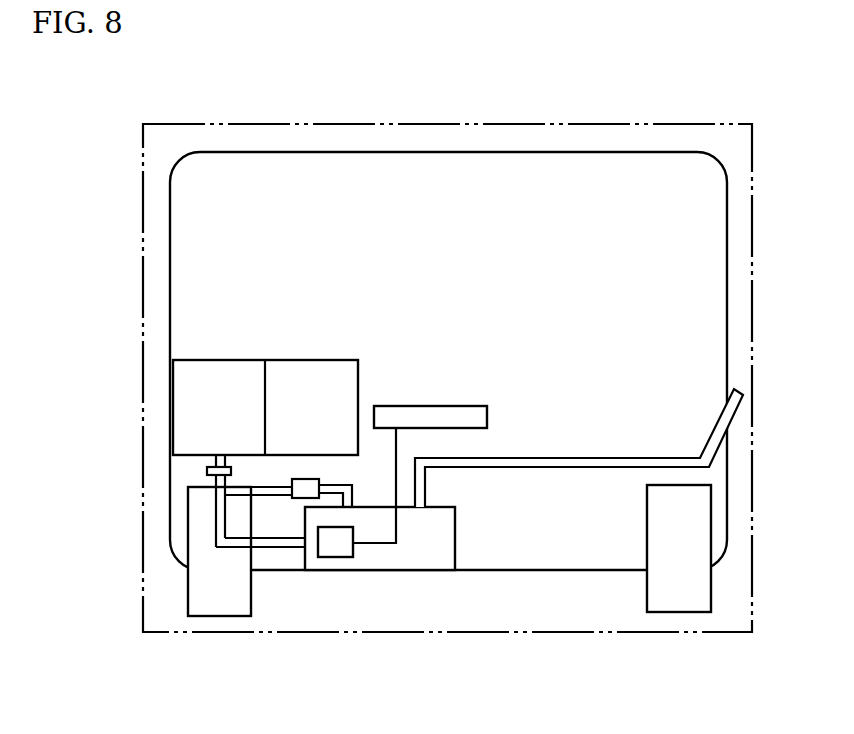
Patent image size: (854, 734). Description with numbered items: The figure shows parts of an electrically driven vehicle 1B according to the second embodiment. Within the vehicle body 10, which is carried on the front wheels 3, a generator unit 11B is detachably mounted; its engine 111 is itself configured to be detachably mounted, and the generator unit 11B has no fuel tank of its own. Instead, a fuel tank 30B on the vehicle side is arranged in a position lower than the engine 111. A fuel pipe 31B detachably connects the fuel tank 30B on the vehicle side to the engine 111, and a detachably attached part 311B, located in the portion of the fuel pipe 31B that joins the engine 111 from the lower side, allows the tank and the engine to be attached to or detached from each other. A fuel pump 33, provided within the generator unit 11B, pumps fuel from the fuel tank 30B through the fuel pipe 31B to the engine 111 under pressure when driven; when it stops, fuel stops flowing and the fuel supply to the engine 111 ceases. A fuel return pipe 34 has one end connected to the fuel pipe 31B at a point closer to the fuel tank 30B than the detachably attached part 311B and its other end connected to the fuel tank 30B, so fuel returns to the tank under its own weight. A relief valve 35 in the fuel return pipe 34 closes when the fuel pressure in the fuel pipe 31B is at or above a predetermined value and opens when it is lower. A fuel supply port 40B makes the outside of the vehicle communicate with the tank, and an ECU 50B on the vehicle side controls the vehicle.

The electrically driven vehicle 1B is at (254, 123).
The vehicle body 10 is at (471, 152).
The generator unit 11B is at (158, 373).
The engine 111 is at (195, 425).
The detachably attached part 311B is at (210, 472).
The fuel pipe 31B is at (220, 513).
The front wheels 3 is at (210, 588).
The fuel return pipe 34 is at (263, 490).
The relief valve 35 is at (302, 490).
The fuel pump 33 is at (339, 543).
The fuel tank on the vehicle side 30B is at (410, 555).
The ECU on the vehicle side 50B is at (462, 418).
The fuel supply port 40B is at (739, 405).